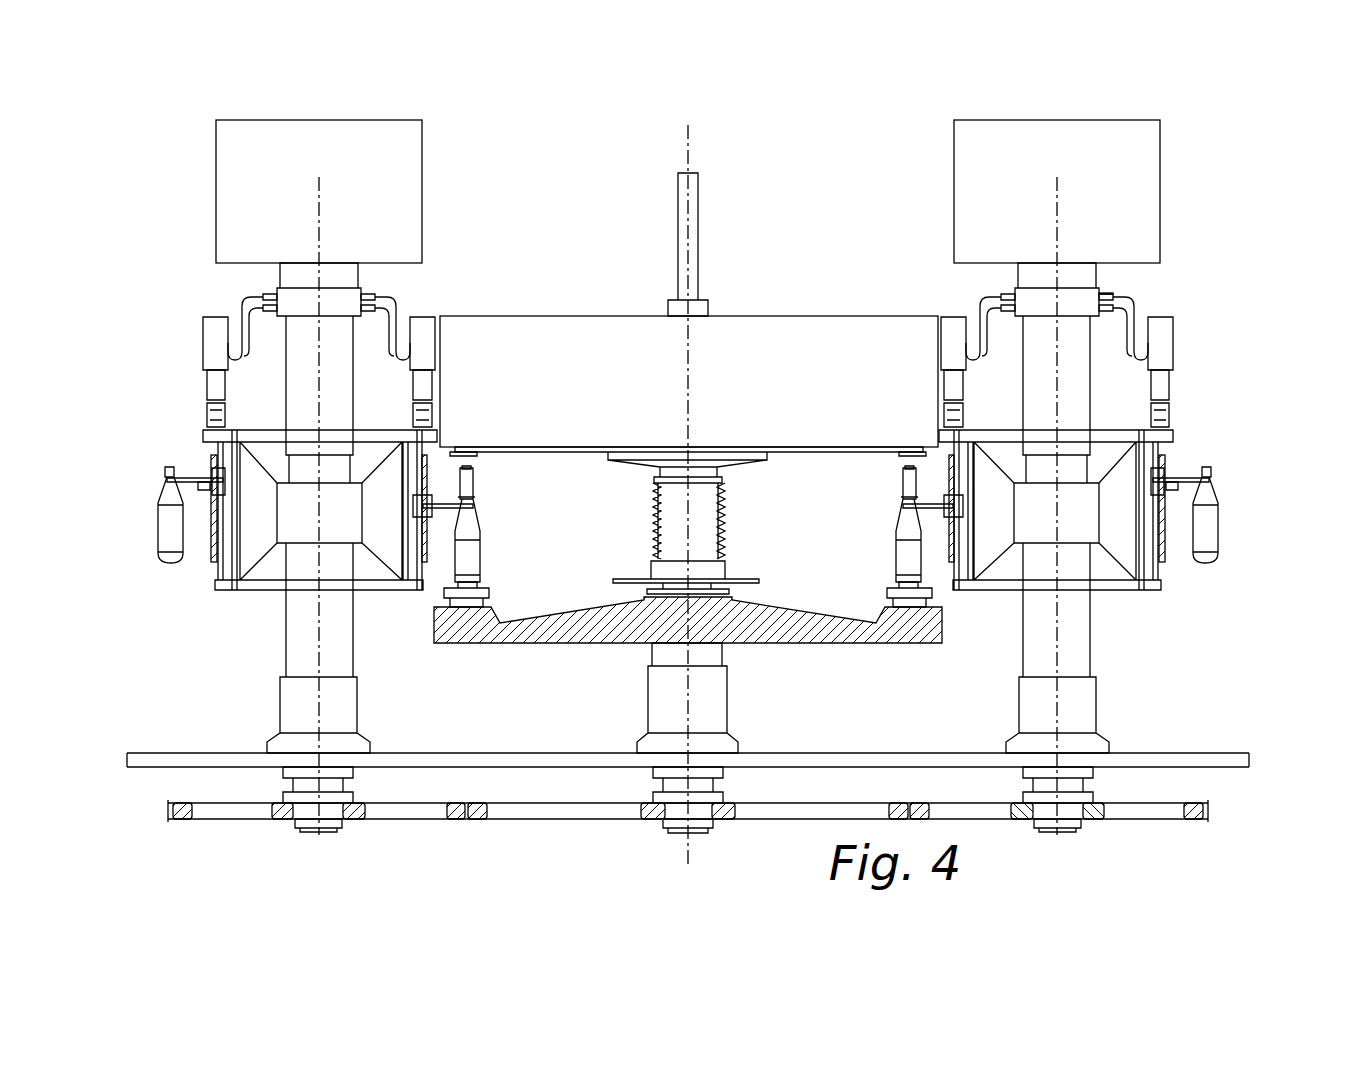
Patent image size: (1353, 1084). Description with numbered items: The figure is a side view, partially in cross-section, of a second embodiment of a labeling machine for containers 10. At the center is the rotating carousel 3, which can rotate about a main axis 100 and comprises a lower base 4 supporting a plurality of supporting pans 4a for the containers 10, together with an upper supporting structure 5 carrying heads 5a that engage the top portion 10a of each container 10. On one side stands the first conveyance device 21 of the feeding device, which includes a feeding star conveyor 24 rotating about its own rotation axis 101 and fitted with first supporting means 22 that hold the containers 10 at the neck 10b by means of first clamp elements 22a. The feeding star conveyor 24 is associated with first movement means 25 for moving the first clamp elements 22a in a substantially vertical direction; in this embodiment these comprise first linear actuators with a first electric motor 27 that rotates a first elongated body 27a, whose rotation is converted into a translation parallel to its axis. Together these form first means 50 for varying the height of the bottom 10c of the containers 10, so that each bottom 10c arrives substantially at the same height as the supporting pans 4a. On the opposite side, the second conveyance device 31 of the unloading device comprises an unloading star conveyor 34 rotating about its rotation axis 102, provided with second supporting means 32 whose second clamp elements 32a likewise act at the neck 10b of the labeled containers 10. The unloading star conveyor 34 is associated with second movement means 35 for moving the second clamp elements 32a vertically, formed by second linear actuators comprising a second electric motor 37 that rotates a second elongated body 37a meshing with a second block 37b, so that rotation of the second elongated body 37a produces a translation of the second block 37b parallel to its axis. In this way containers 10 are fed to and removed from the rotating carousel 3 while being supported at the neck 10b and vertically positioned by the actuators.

The rotating carousel 3 is at (557, 650).
The lower base 4 is at (832, 632).
The supporting pans 4a is at (462, 607).
The upper supporting structure 5 is at (752, 316).
The heads 5a is at (466, 452).
The containers 10 is at (155, 533).
The top portion 10a is at (470, 497).
The neck 10b is at (167, 480).
The bottom 10c is at (170, 565).
The first conveyance device 21 is at (1118, 472).
The first supporting means 22 is at (1163, 468).
The first clamp elements 22a is at (926, 505).
The feeding star conveyor 24 is at (944, 312).
The first movement means 25 is at (938, 348).
The first electric motor 27 is at (955, 320).
The first elongated body 27a is at (951, 565).
The second conveyance device 31 is at (389, 477).
The second supporting means 32 is at (236, 490).
The second clamp elements 32a is at (213, 468).
The unloading star conveyor 34 is at (432, 312).
The second movement means 35 is at (201, 345).
The second electric motor 37 is at (213, 320).
The second elongated body 37a is at (211, 563).
The second block 37b is at (212, 500).
The first means for varying the height 50 is at (1147, 310).
The main axis 100 is at (688, 145).
The rotation axis of the feeding star conveyor 101 is at (1058, 212).
The rotation axis of the unloading star conveyor 102 is at (319, 212).